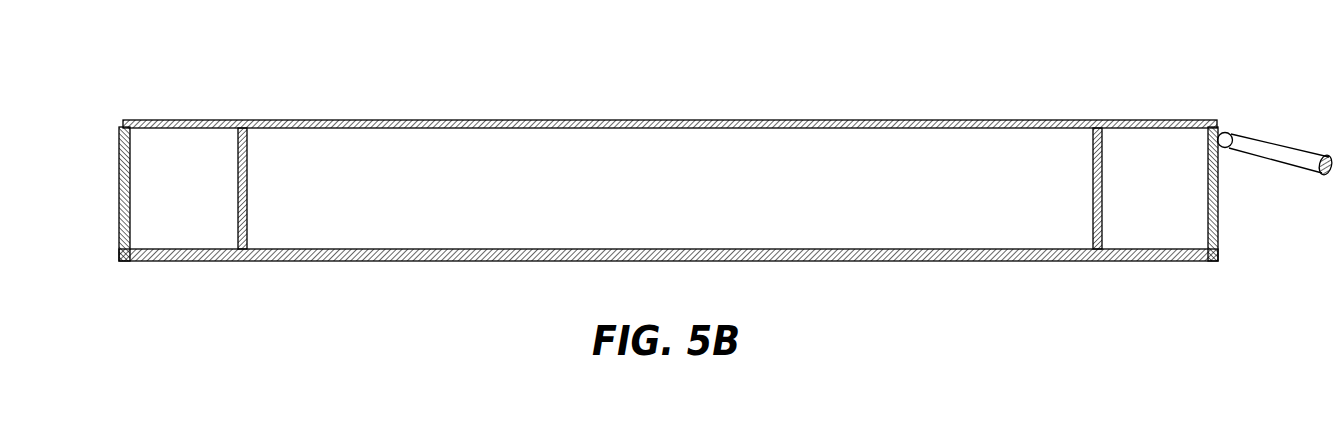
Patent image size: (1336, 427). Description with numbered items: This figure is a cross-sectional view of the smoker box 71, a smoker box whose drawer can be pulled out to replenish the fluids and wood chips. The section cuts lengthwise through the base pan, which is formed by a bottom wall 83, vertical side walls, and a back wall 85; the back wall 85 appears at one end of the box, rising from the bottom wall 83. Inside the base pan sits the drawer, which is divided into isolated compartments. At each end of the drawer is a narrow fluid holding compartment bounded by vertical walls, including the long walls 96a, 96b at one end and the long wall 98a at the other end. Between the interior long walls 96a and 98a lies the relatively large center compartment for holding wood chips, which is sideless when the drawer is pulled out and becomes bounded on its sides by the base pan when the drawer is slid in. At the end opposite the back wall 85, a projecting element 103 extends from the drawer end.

The smoker box 71 is at (700, 160).
The bottom wall 83 is at (558, 262).
The back wall 85 is at (119, 183).
The long wall 96a is at (1093, 218).
The long wall 96b is at (1218, 223).
The long wall 98a is at (249, 218).
The pin 103 is at (1243, 134).